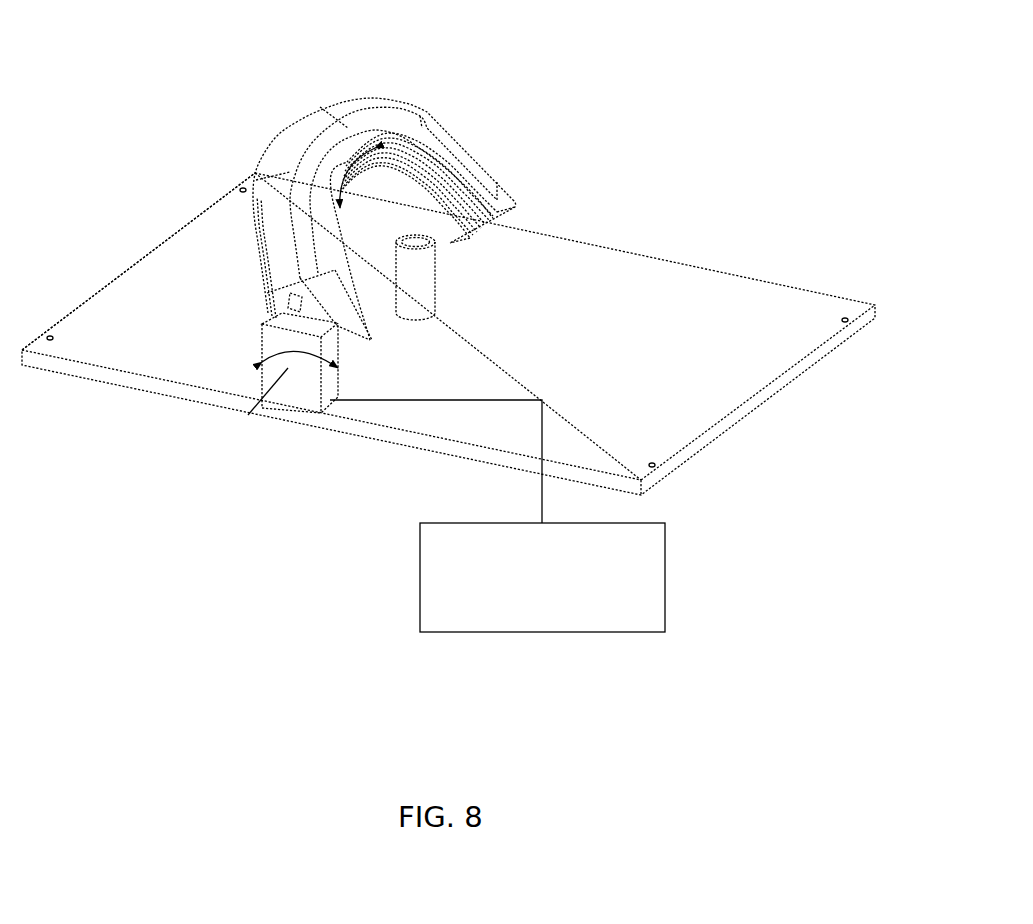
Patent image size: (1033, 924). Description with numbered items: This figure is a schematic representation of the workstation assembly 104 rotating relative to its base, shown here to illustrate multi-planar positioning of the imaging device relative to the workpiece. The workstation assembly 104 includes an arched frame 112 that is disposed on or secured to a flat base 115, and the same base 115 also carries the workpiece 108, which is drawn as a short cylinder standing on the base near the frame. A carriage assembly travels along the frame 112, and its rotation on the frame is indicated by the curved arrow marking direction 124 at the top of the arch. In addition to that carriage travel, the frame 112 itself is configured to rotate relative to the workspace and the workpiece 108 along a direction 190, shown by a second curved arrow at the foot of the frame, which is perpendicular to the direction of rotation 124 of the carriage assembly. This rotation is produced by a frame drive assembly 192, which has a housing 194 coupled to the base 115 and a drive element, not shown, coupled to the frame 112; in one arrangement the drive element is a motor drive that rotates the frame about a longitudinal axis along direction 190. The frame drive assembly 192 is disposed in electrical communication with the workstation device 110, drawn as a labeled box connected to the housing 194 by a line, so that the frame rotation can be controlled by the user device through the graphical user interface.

The workstation assembly 104 is at (647, 97).
The frame 112 is at (410, 105).
The direction of rotation 124 is at (343, 172).
The base 115 is at (695, 268).
The workpiece 108 is at (443, 288).
The direction 190 is at (285, 350).
The frame drive assembly 192 is at (227, 382).
The housing 194 is at (340, 395).
The workstation device 110 is at (497, 516).